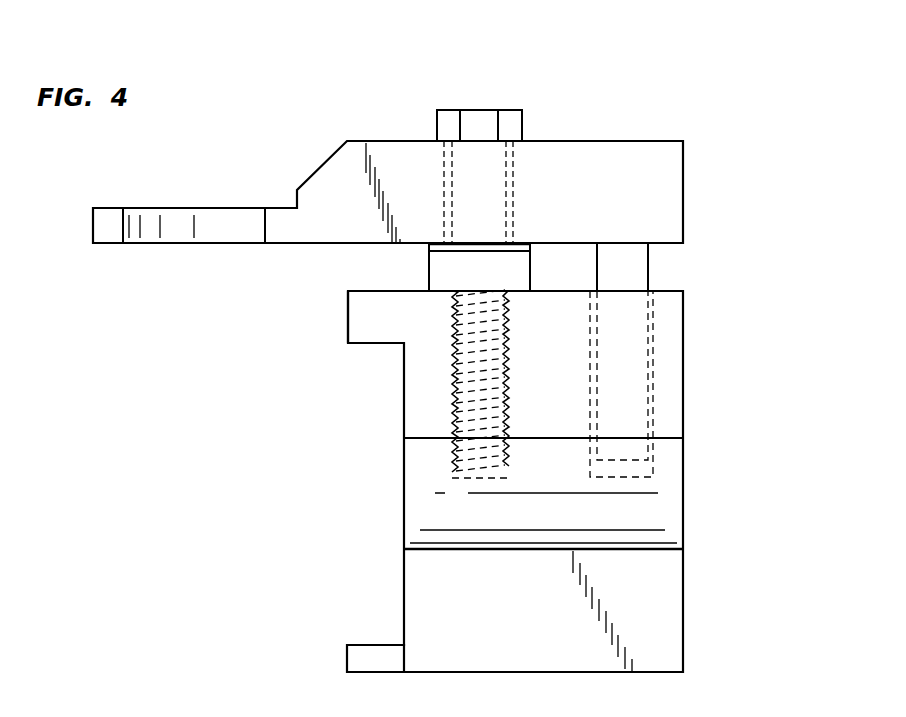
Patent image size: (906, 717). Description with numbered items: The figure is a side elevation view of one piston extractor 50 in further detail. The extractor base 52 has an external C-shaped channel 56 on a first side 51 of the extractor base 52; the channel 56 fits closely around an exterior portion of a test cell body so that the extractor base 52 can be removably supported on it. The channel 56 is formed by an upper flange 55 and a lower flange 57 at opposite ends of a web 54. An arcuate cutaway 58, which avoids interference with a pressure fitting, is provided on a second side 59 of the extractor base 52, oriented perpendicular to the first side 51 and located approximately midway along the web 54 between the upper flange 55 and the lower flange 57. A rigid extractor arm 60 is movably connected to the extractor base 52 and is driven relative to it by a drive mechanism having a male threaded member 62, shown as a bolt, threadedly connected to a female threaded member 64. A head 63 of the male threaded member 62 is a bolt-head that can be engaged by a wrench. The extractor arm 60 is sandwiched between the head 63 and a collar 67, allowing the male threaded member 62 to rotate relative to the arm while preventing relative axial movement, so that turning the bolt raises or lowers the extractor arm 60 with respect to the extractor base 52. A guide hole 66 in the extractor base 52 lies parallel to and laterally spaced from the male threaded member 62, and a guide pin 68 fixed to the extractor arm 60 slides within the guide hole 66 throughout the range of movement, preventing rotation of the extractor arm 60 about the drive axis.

The piston extractor 50 is at (558, 92).
The first side 51 is at (348, 315).
The extractor base 52 is at (672, 403).
The web 54 is at (404, 558).
The upper flange 55 is at (372, 345).
The C-shaped channel 56 is at (385, 440).
The lower flange 57 is at (370, 645).
The arcuate cutaway 58 is at (683, 495).
The second side 59 is at (563, 377).
The extractor arm 60 is at (685, 193).
The male threaded member 62 is at (452, 384).
The head 63 is at (478, 110).
The female threaded member 64 is at (452, 478).
The guide hole 66 is at (618, 480).
The collar 67 is at (532, 268).
The guide pin 68 is at (628, 364).